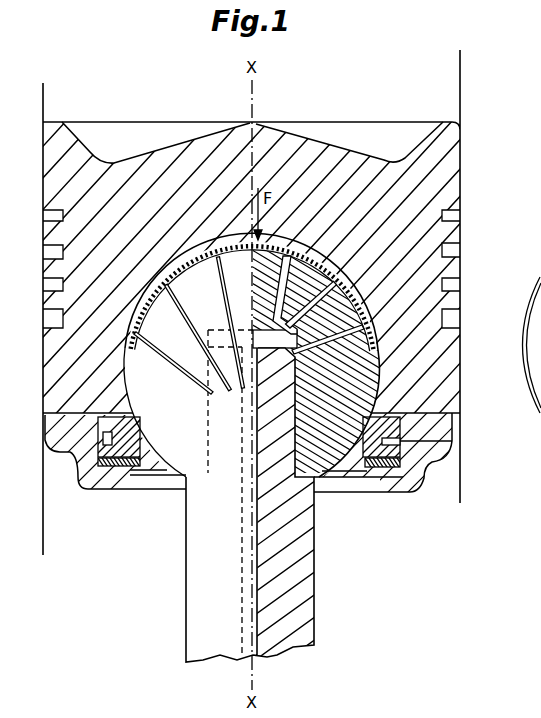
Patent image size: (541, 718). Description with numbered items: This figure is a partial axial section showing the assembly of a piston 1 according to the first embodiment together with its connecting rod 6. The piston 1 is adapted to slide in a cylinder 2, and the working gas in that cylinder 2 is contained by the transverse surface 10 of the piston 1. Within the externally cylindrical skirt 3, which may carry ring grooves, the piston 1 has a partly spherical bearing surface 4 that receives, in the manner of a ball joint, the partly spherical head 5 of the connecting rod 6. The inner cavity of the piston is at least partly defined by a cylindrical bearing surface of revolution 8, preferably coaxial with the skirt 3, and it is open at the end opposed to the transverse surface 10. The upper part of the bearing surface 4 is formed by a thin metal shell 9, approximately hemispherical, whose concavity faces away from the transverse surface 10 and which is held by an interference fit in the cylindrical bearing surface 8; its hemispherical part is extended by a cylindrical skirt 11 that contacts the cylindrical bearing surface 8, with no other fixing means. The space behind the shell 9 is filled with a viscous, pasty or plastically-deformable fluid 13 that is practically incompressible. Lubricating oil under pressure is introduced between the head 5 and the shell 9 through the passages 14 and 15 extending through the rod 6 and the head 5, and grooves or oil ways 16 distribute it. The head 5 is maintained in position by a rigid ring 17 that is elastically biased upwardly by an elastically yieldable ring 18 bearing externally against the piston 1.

The piston 1 is at (468, 156).
The cylinder 2 is at (45, 530).
The skirt 3 is at (440, 366).
The partly spherical bearing surface 4 is at (366, 284).
The partly spherical head 5 is at (345, 396).
The connecting rod 6 is at (322, 560).
The cylindrical bearing surface of revolution 8 is at (123, 362).
The thin metal shell 9 is at (373, 372).
The transverse surface 10 is at (323, 142).
The cylindrical skirt 11 is at (127, 393).
The viscous, pasty or plastically-deformable fluid 13 is at (157, 277).
The passage 14 is at (252, 624).
The passage 15 is at (372, 317).
The grooves or oil ways 16 is at (200, 339).
The rigid ring 17 is at (452, 442).
The elastically yieldable ring 18 is at (121, 462).